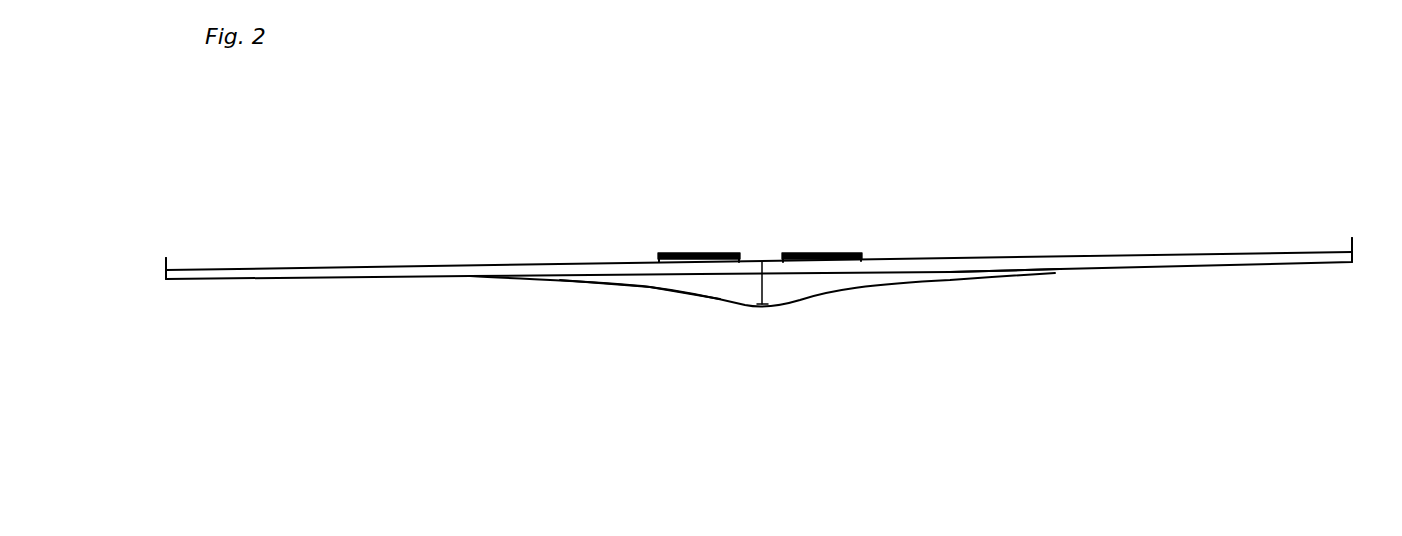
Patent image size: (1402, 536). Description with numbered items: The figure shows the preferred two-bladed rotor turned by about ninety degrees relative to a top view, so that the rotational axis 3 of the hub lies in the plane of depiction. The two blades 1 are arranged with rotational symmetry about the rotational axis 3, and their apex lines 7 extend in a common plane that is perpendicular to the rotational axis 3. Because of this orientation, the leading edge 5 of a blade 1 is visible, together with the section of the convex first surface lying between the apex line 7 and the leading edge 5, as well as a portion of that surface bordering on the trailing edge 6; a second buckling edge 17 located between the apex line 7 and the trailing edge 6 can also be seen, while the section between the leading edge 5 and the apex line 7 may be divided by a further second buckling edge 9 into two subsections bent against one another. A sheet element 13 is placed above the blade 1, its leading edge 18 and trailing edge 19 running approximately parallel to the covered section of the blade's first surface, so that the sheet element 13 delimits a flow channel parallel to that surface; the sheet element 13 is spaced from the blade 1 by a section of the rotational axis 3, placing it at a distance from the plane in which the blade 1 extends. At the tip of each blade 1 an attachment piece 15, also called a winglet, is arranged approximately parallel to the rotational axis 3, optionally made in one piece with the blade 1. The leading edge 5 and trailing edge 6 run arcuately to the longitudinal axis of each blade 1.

The blade 1 is at (584, 197).
The rotational axis 3 is at (762, 260).
The leading edge 5 is at (682, 295).
The trailing edge 6 is at (834, 292).
The apex line 7 is at (490, 263).
The second buckling edge 9 is at (615, 280).
The sheet element 13 is at (691, 252).
The attachment piece 15 is at (166, 256).
The second buckling edge 17 is at (954, 272).
The leading edge of the sheet element 18 is at (843, 252).
The trailing edge of the sheet element 19 is at (843, 252).